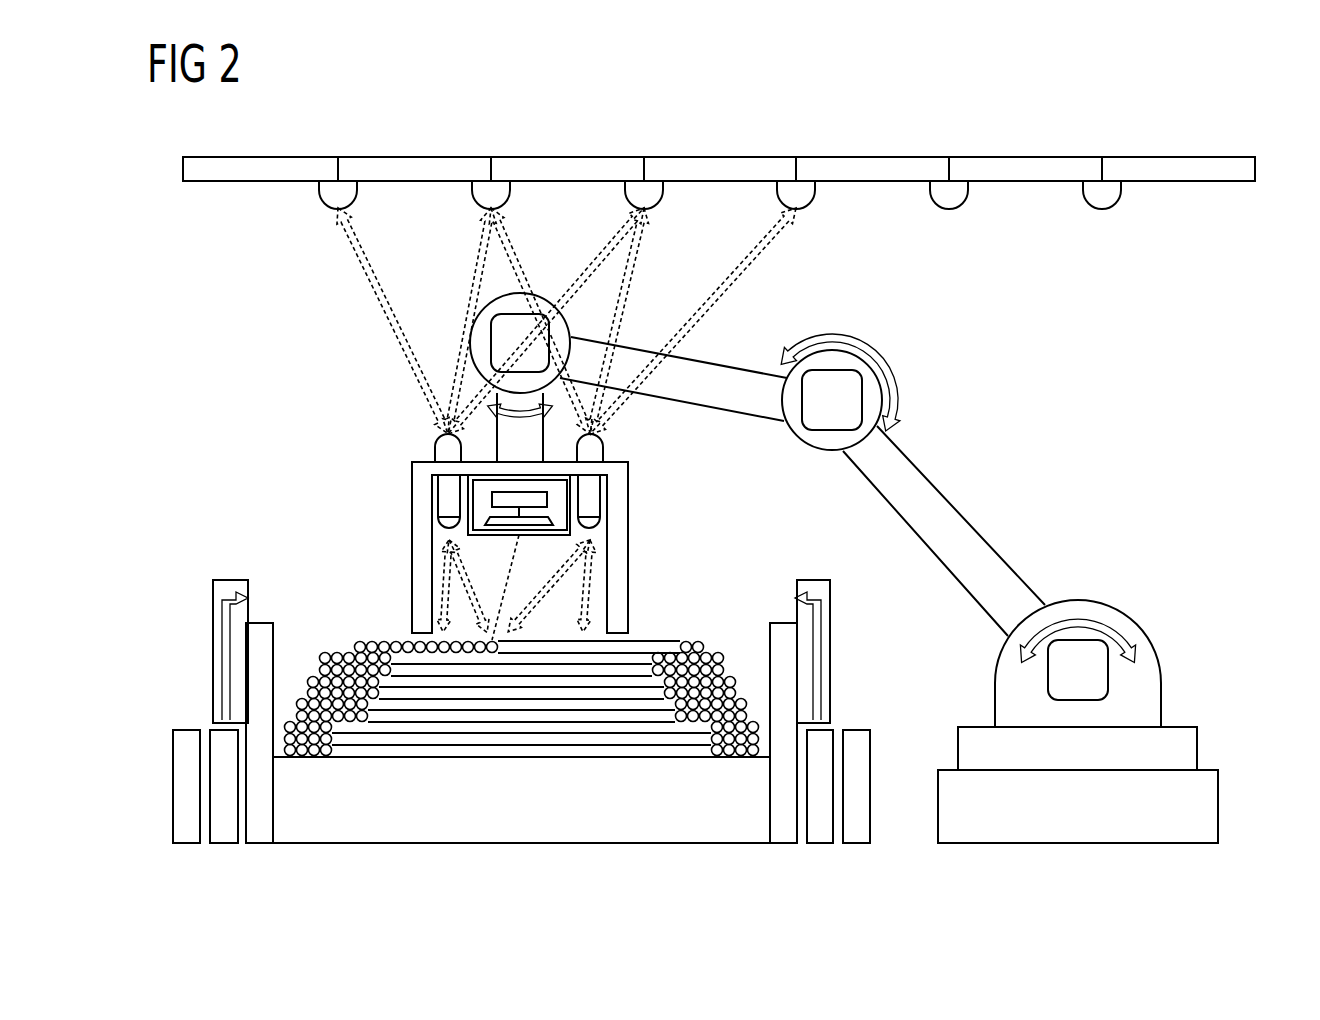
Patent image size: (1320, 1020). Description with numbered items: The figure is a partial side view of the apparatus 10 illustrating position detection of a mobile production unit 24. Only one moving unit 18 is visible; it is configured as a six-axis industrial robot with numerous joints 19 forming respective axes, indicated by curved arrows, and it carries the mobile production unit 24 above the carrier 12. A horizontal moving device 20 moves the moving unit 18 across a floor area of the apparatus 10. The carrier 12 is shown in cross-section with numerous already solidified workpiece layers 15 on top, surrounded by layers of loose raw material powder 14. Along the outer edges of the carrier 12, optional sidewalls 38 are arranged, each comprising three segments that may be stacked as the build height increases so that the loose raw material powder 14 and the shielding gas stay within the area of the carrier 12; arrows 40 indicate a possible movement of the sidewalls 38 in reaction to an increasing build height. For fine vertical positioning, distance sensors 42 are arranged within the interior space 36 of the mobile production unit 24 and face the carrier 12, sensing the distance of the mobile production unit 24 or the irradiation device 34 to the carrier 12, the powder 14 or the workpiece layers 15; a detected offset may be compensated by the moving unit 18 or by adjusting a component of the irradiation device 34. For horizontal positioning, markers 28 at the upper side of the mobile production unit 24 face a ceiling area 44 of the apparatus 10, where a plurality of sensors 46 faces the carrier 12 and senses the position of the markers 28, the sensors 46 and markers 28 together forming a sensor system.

The apparatus 10 is at (224, 400).
The carrier 12 is at (520, 833).
The loose raw material powder 14 is at (346, 665).
The workpiece layers 15 is at (648, 650).
The moving unit 18 is at (962, 540).
The joints 19 is at (500, 333).
The horizontal moving device 20 is at (1058, 833).
The mobile production unit 24 is at (420, 567).
The markers 28 is at (440, 455).
The irradiation device 34 is at (560, 494).
The interior space 36 is at (532, 572).
The sidewalls 38 is at (257, 833).
The arrows 40 is at (222, 634).
The distance sensors 42 is at (442, 503).
The ceiling area 44 is at (1025, 172).
The sensors 46 is at (326, 198).